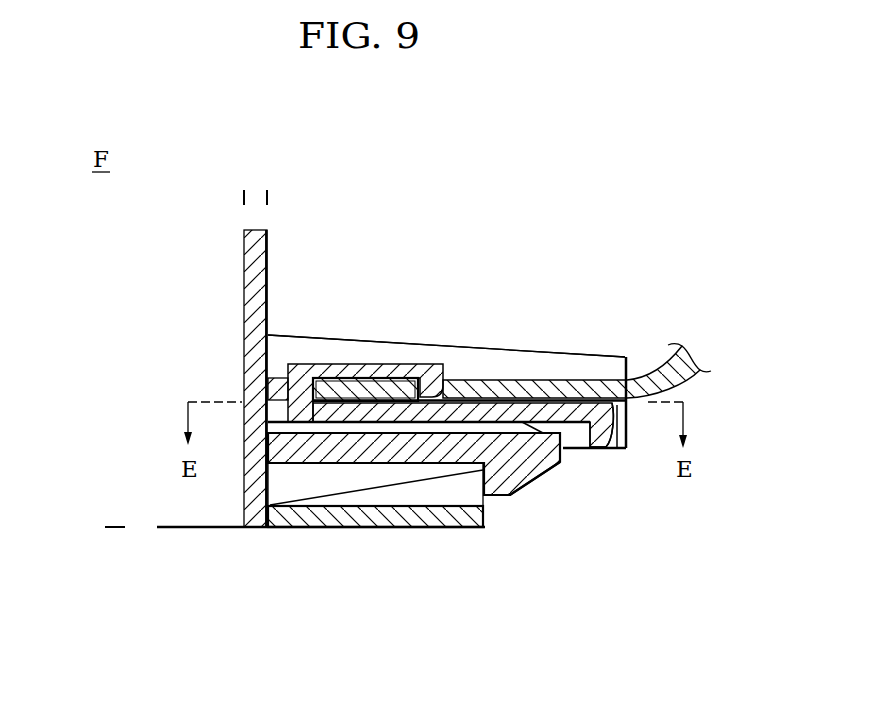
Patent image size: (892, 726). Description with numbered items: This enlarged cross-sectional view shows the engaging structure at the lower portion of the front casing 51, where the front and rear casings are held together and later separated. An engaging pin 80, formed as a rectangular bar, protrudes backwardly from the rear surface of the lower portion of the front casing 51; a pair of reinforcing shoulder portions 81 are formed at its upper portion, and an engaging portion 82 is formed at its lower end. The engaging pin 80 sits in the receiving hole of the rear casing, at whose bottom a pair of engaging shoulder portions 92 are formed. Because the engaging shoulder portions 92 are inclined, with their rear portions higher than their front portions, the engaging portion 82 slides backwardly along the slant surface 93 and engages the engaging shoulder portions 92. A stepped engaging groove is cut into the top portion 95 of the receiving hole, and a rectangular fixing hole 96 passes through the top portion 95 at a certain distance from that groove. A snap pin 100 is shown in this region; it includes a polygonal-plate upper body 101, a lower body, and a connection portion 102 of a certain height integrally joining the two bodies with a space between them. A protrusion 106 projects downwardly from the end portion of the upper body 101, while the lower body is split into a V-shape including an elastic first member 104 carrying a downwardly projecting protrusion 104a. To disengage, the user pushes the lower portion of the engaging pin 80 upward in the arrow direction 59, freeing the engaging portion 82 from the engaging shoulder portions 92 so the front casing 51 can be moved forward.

The front casing 51 is at (246, 487).
The arrow direction 59 is at (540, 503).
The engaging pin 80 is at (314, 494).
The reinforcing shoulder portions 81 is at (353, 428).
The engaging portion 82 is at (500, 493).
The engaging shoulder portions 92 is at (455, 500).
The slant surface 93 is at (433, 478).
The top portion 95 is at (268, 340).
The fixing hole 96 is at (445, 391).
The snap pin 100 is at (341, 356).
The upper body 101 is at (376, 385).
The connection portion 102 is at (303, 372).
The first member 104 is at (332, 413).
The protrusion 104a is at (607, 444).
The protrusion 106 is at (446, 400).